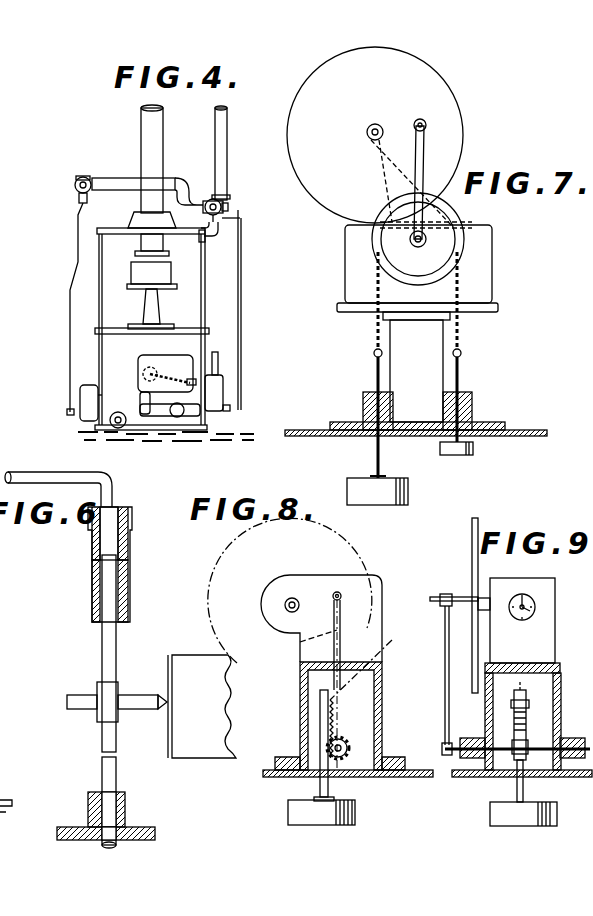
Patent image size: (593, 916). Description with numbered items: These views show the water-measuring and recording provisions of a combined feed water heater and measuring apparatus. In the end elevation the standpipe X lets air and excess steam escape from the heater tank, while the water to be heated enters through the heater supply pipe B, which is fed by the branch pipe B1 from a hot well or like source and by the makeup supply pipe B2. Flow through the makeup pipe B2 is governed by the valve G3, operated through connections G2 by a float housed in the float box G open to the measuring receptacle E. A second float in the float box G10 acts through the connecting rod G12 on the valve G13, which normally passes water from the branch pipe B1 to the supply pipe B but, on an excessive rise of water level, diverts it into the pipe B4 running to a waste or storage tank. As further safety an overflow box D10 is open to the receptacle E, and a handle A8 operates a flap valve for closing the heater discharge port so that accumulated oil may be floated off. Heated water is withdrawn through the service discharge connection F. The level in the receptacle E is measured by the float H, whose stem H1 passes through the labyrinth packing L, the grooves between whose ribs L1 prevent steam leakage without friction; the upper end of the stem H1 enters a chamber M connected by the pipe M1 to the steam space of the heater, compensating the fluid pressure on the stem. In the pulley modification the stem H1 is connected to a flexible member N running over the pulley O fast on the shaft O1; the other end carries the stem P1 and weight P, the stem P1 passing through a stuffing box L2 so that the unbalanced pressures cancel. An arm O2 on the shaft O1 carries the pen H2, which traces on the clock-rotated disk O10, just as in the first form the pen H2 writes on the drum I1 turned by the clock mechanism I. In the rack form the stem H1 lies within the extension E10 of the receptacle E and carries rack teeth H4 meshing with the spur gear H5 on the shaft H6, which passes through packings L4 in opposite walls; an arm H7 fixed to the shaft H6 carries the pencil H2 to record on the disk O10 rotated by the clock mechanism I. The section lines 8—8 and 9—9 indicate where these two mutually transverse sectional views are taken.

In FIG. 4, the standpipe X is at (163, 137).
In FIG. 4, the branch pipe B1 is at (227, 144).
In FIG. 4, the makeup supply pipe B2 is at (108, 178).
In FIG. 4, the waste or storage pipe B4 is at (240, 218).
In FIG. 4, the heater supply pipe B is at (212, 240).
In FIG. 4, the makeup valve G3 is at (75, 180).
In FIG. 4, the diverting valve G13 is at (222, 202).
In FIG. 4, the connecting rod G12 is at (241, 296).
In FIG. 4, the float connections G2 is at (70, 290).
In FIG. 4, the float box G is at (88, 385).
In FIG. 4, the second float box G10 is at (223, 390).
In FIG. 4, the record drum I1 is at (140, 240).
In FIG. 6, the record drum I1 is at (202, 706).
In FIG. 4, the clock mechanism I is at (131, 275).
In FIG. 7, the clock mechanism I is at (492, 272).
In FIG. 8, the clock mechanism I is at (321, 618).
In FIG. 9, the clock mechanism I is at (516, 620).
In FIG. 4, the overflow box D10 is at (142, 368).
In FIG. 6, the overflow box D10 is at (15, 772).
In FIG. 4, the flap valve handle A8 is at (218, 360).
In FIG. 4, the service discharge connection F is at (124, 430).
In FIG. 7, the clock-rotated disk O10 is at (306, 74).
In FIG. 8, the clock-rotated disk O10 is at (362, 552).
In FIG. 9, the clock-rotated disk O10 is at (470, 534).
In FIG. 7, the pulley O is at (372, 248).
In FIG. 7, the pulley shaft O1 is at (428, 243).
In FIG. 7, the pen arm O2 is at (424, 140).
In FIG. 7, the pen or pencil H2 is at (422, 118).
In FIG. 6, the pen or pencil H2 is at (142, 694).
In FIG. 8, the pen or pencil H2 is at (333, 594).
In FIG. 9, the pen or pencil H2 is at (436, 592).
In FIG. 7, the float stem H1 is at (376, 366).
In FIG. 6, the float stem H1 is at (116, 638).
In FIG. 8, the float stem H1 is at (330, 700).
In FIG. 9, the float stem H1 is at (524, 790).
In FIG. 7, the float H is at (394, 488).
In FIG. 8, the float H is at (321, 812).
In FIG. 9, the float H is at (523, 814).
In FIG. 7, the flexible member N is at (372, 338).
In FIG. 7, the weight stem P1 is at (460, 366).
In FIG. 7, the weight P is at (474, 450).
In FIG. 7, the labyrinth packing L is at (362, 404).
In FIG. 6, the labyrinth packing L is at (126, 820).
In FIG. 6, the packing ribs L1 is at (88, 806).
In FIG. 7, the second stuffing box L2 is at (473, 404).
In FIG. 9, the shaft packings L4 is at (470, 738).
In FIG. 7, the measuring receptacle E is at (308, 430).
In FIG. 8, the measuring receptacle E is at (276, 770).
In FIG. 8, the receptacle extension E10 is at (300, 698).
In FIG. 9, the receptacle extension E10 is at (561, 680).
In FIG. 6, the pressure chamber M is at (128, 558).
In FIG. 6, the equalizing pipe M1 is at (54, 462).
In FIG. 8, the rack teeth H4 is at (334, 722).
In FIG. 8, the spur gear H5 is at (350, 756).
In FIG. 9, the spur gear H5 is at (534, 716).
In FIG. 8, the gear shaft H6 is at (348, 742).
In FIG. 9, the gear shaft H6 is at (512, 748).
In FIG. 8, the pencil arm H7 is at (300, 642).
In FIG. 9, the pencil arm H7 is at (445, 652).
In FIG. 9, the section line 8 is at (520, 664).
In FIG. 8, the section line 9 is at (360, 788).